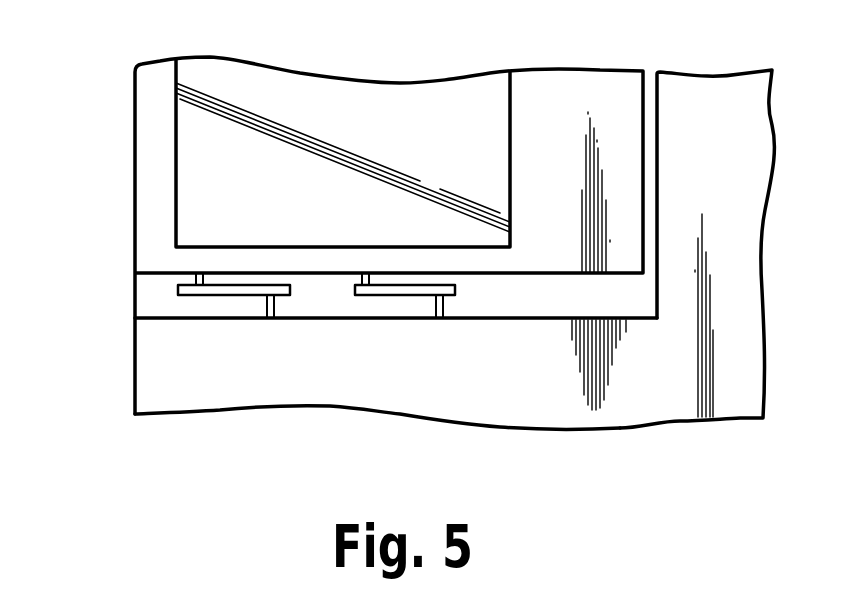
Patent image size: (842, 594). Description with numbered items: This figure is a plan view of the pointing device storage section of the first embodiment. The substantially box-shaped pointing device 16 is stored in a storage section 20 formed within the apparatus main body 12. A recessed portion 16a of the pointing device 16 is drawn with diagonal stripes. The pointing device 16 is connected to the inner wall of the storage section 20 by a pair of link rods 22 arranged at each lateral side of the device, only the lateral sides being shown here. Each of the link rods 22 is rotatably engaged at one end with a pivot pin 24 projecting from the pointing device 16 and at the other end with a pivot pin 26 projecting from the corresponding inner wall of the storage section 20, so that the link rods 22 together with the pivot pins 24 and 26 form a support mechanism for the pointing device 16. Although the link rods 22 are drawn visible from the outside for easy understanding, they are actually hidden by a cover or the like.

The apparatus main body 12 is at (676, 334).
The pointing device 16 is at (154, 144).
The cavity 16a is at (410, 118).
The storage section 20 is at (558, 308).
The link rods 22 is at (202, 277).
The pivot pin 24 is at (205, 275).
The pivot pin 26 is at (263, 300).